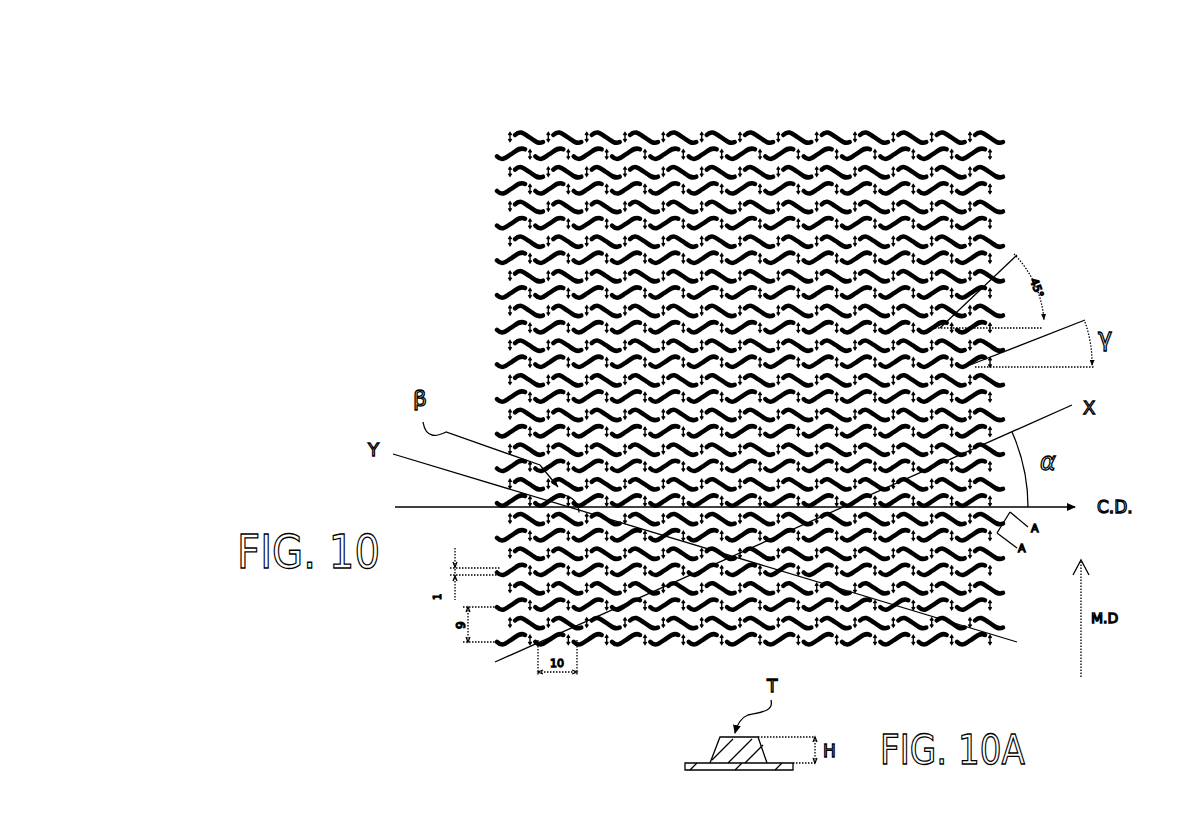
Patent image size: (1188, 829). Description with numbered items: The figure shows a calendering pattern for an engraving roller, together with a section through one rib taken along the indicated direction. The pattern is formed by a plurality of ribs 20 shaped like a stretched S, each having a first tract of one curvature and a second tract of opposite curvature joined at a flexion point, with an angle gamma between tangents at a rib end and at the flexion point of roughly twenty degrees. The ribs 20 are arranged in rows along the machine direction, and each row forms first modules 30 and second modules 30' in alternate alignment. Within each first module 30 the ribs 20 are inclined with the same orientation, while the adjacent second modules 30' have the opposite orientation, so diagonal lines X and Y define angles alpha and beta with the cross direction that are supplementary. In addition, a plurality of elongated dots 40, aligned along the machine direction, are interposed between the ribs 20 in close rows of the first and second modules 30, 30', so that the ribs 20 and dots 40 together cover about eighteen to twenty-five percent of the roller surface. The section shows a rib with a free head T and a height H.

The ribs 20 is at (734, 356).
The first modules 30 is at (759, 355).
The second modules 30' is at (741, 359).
The dots 40 is at (958, 184).